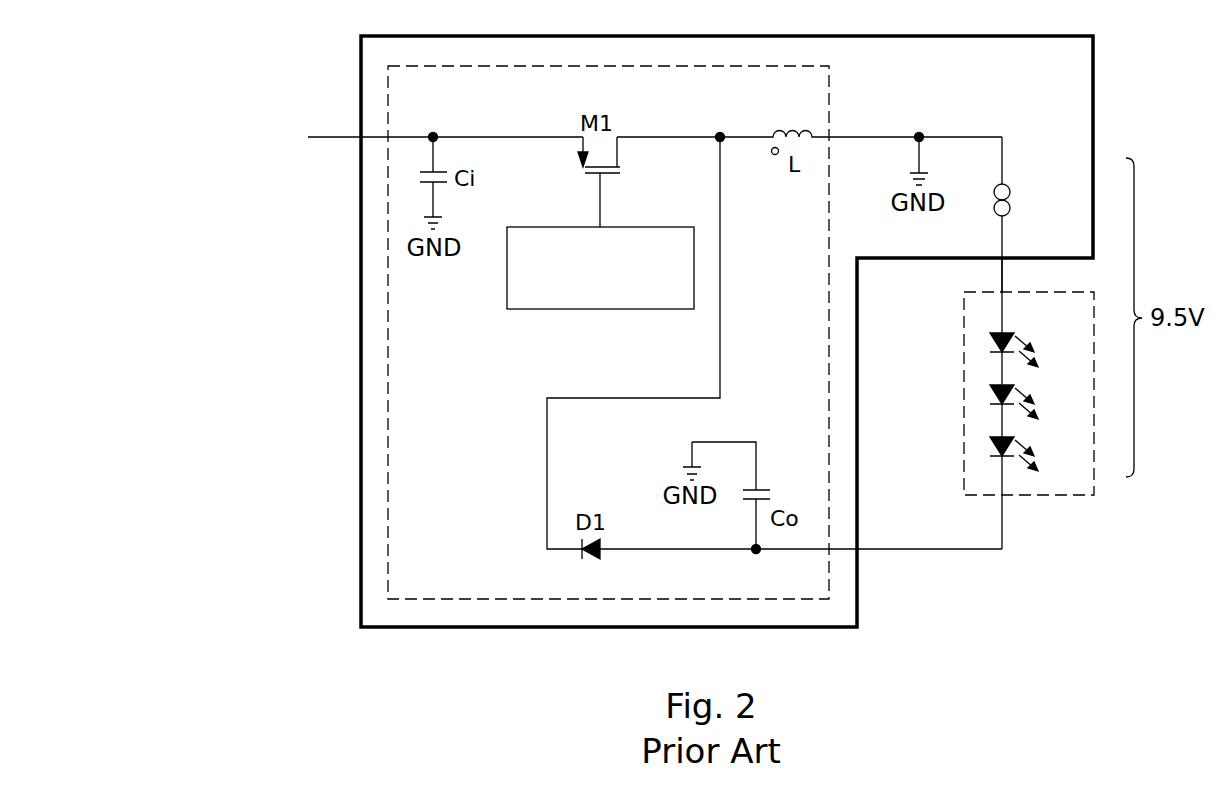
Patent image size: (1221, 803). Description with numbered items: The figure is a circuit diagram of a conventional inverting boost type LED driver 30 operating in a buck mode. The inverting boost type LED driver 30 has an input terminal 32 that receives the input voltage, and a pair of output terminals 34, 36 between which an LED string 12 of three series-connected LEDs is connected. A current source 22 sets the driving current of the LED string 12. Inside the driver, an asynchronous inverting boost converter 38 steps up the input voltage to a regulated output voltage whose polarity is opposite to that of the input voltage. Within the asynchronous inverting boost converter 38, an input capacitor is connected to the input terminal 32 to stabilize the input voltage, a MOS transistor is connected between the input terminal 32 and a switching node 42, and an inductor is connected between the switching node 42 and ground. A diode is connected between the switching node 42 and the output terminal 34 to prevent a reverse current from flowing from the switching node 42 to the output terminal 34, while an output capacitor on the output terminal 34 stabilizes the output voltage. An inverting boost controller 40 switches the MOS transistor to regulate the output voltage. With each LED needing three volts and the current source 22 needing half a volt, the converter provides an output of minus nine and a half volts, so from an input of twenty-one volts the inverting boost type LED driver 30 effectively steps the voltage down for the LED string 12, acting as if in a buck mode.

The LED string 12 is at (1047, 497).
The current source 22 is at (1003, 186).
The inverting boost type LED driver 30 is at (361, 333).
The input terminal 32 is at (336, 136).
The output terminal 34 is at (878, 551).
The output terminal 36 is at (1001, 272).
The asynchronous inverting boost converter 38 is at (829, 105).
The inverting boost controller 40 is at (595, 311).
The switching node 42 is at (720, 132).